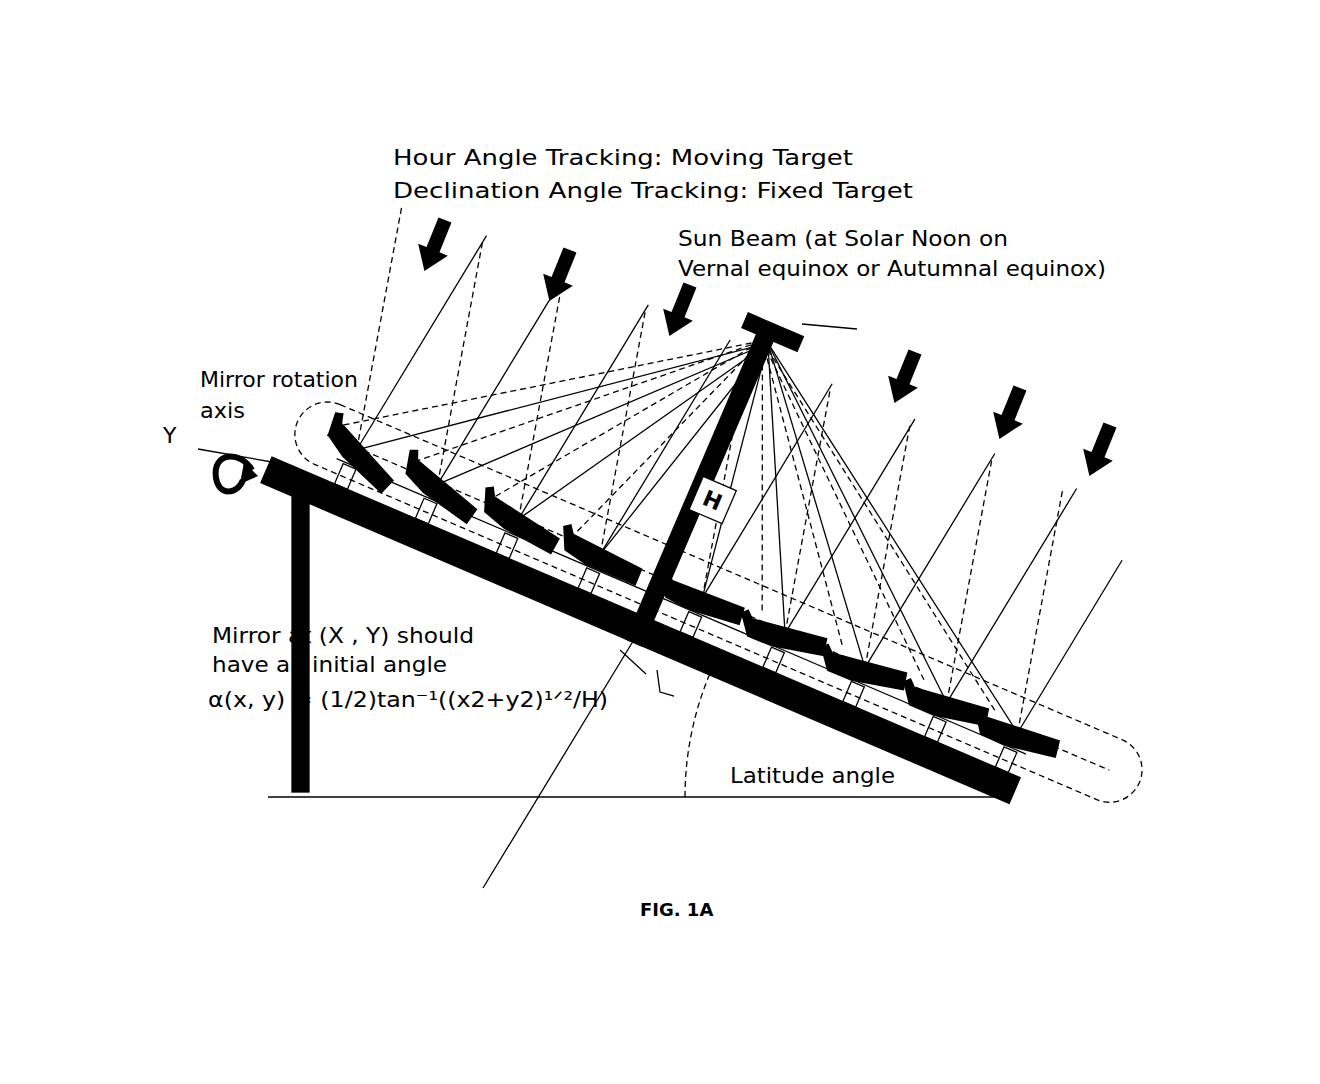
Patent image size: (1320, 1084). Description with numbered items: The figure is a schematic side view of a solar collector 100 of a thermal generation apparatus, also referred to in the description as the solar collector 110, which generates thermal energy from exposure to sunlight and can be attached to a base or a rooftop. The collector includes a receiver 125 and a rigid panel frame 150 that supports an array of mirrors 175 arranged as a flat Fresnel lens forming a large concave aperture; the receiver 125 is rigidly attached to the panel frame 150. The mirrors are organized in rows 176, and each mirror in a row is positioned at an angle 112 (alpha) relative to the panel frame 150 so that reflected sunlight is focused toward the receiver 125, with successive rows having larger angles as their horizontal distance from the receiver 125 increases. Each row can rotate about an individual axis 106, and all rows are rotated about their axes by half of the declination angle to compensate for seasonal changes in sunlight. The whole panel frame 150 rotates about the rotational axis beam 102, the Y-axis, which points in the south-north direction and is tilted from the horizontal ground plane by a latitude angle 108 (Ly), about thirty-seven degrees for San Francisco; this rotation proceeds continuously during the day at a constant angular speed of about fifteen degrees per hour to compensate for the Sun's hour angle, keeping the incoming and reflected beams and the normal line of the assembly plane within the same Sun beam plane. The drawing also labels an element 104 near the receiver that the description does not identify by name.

The solar collector 100 is at (1129, 102).
The rotational axis beam 102 is at (182, 462).
The target (receiver) 104 is at (849, 320).
The individual axis 106 is at (330, 440).
The latitude angle 108 is at (764, 745).
The solar collector 110 is at (510, 808).
The angle 112 is at (1115, 752).
The receiver 125 is at (808, 342).
The panel frame 150 is at (1023, 800).
The array of mirrors 175 is at (1150, 776).
The rows of flat mirrors 176 is at (1068, 776).